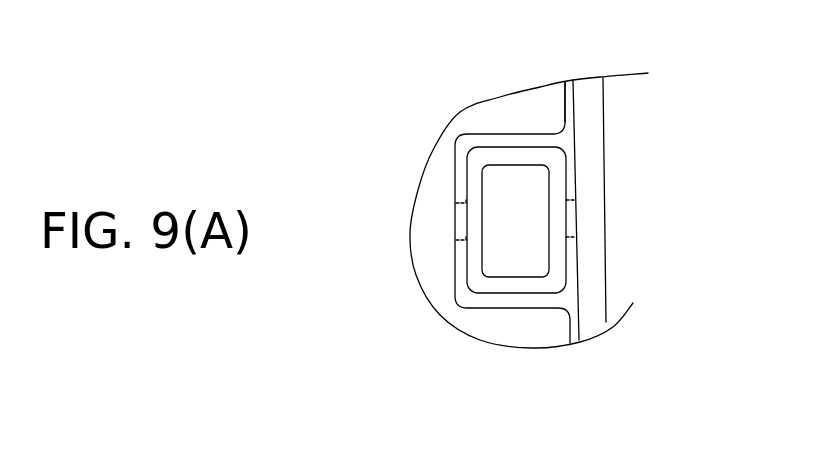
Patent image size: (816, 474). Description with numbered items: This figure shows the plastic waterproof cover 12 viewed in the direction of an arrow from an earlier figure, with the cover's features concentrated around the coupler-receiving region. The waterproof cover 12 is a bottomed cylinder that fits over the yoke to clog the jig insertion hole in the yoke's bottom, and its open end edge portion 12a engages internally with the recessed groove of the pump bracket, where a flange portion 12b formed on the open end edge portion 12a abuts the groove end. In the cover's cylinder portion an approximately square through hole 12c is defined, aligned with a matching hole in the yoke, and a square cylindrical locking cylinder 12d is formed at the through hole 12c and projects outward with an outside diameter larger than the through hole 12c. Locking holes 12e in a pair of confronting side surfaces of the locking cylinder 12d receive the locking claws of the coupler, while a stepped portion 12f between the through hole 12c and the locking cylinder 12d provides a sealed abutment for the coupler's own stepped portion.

The waterproof cover 12 is at (445, 258).
The open end edge portion 12a is at (600, 213).
The flange portion 12b is at (568, 102).
The through hole 12c is at (547, 229).
The locking cylinder 12d is at (511, 300).
The locking holes 12e is at (460, 208).
The stepped portion 12f is at (558, 182).